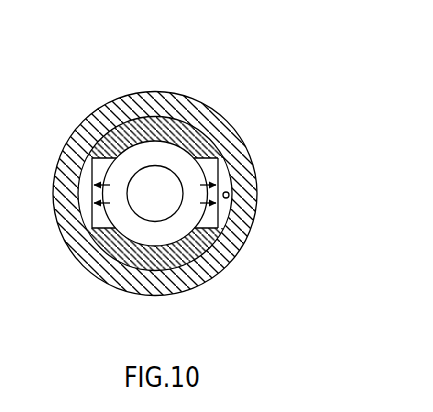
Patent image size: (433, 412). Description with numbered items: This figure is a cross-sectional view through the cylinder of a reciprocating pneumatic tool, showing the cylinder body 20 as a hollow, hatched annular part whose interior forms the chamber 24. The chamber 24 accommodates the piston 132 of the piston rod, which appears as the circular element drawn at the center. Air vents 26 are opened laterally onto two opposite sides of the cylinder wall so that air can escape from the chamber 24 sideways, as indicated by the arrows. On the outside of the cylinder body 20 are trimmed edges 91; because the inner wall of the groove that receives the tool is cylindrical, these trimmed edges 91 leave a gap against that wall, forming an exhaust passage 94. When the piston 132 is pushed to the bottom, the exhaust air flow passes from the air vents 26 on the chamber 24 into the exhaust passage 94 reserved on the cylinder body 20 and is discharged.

The cylinder body 20 is at (190, 257).
The chamber 24 is at (176, 156).
The air vents 26 is at (210, 222).
The trimmed edges 91 is at (221, 174).
The exhaust passage 94 is at (230, 195).
The piston 132 is at (110, 141).